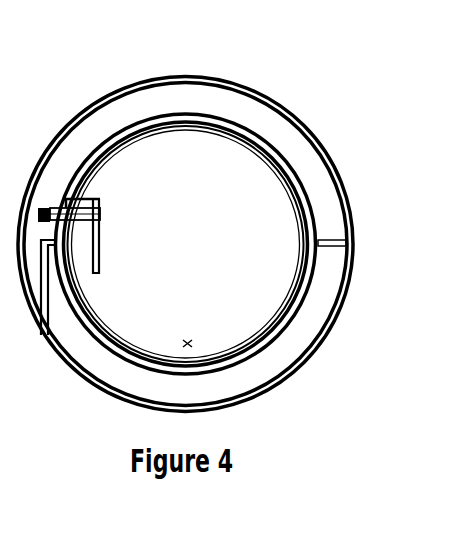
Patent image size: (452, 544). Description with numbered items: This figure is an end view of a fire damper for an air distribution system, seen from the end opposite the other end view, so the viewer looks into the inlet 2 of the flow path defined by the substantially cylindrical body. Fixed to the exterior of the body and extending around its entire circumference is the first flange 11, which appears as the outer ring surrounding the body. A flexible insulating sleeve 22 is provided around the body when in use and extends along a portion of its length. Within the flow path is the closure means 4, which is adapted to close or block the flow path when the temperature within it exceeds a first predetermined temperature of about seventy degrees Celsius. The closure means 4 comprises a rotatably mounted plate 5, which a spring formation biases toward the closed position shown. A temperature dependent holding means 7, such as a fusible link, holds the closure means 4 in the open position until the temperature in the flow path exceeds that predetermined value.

The inlet 2 is at (276, 380).
The first flange 11 is at (299, 138).
The rotatably mounted plate 5 is at (193, 167).
The flexible insulating sleeve 22 is at (354, 219).
The temperature dependent holding means 7 is at (98, 199).
The closure means 4 is at (148, 315).